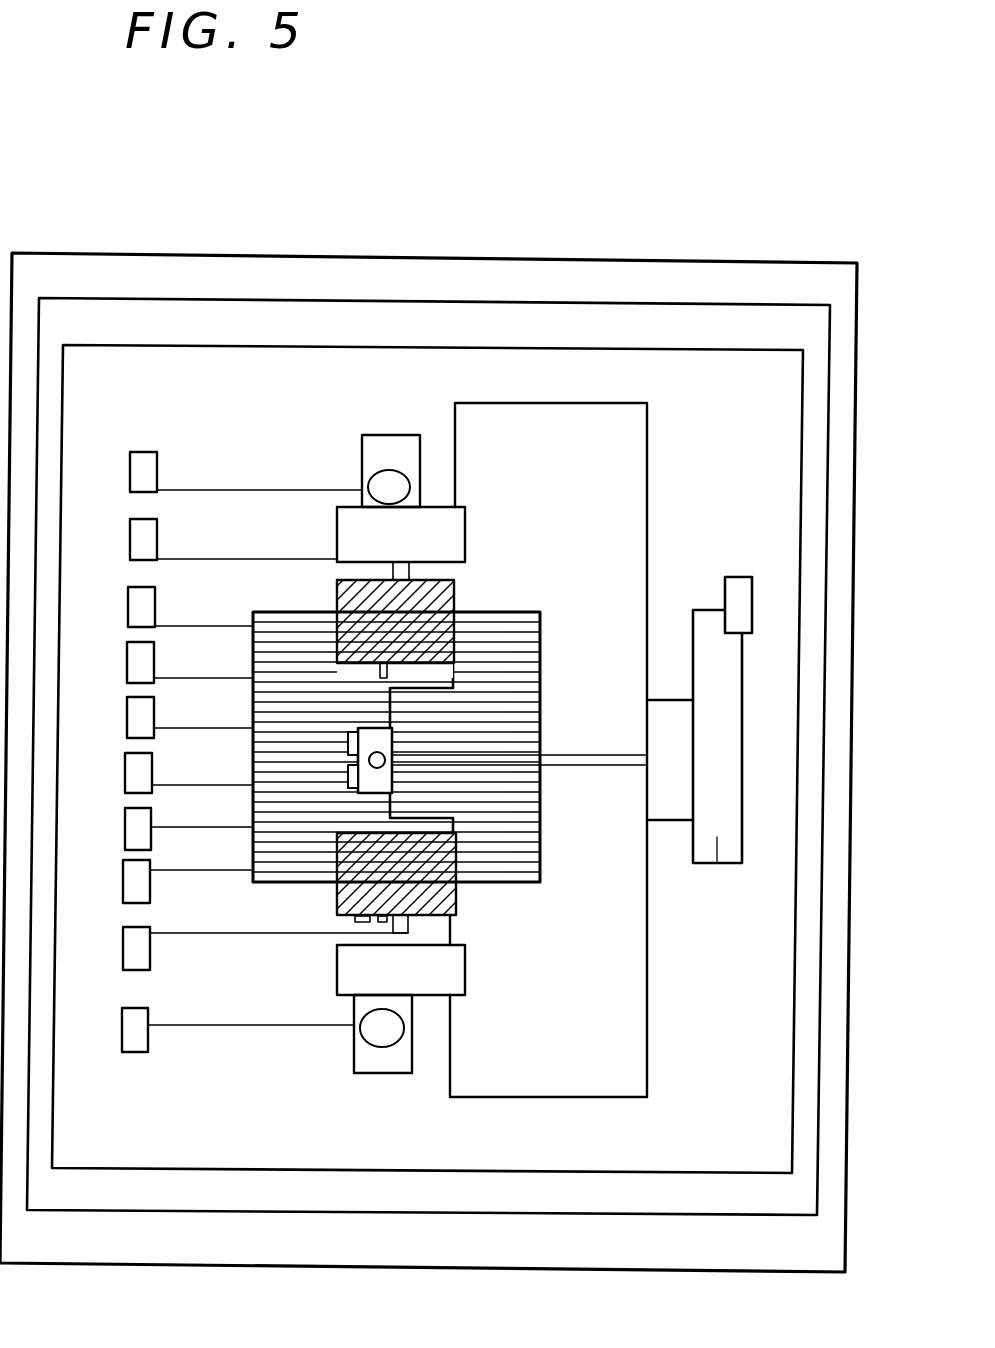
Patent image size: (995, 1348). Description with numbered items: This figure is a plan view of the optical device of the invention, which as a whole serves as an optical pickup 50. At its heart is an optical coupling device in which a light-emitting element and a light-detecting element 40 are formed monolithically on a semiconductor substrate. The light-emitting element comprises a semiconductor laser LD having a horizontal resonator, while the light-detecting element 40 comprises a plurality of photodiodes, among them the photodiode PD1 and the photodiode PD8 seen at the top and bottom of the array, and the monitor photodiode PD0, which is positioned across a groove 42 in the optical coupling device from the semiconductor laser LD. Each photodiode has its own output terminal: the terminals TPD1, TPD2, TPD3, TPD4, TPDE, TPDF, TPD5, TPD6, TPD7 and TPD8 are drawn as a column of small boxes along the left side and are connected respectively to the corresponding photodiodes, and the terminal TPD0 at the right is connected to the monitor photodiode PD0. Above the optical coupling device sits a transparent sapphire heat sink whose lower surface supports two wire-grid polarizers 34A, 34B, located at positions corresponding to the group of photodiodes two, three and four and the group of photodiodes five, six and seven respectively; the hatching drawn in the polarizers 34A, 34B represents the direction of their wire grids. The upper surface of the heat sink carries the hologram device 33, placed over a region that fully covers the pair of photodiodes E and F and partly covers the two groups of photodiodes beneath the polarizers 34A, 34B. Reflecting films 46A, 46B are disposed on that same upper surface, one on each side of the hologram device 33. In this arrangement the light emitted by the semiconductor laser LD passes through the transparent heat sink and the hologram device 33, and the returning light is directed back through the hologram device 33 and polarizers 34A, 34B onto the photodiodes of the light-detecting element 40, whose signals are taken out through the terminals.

The optical pickup 50 is at (382, 246).
The light-detecting element 40 is at (296, 468).
The hologram device 33 is at (527, 884).
The polarizer 34A is at (450, 597).
The polarizer 34B is at (443, 903).
The reflecting film 46A is at (435, 522).
The reflecting film 46B is at (423, 973).
The groove 42 is at (678, 710).
The semiconductor laser LD is at (584, 738).
The photodiode PD1 is at (388, 443).
The photodiode PD8 is at (365, 1060).
The monitor photodiode PD0 is at (717, 837).
The terminal TPD0 is at (738, 587).
The terminal TPD1 is at (112, 472).
The terminal TPD2 is at (201, 539).
The terminal TPD3 is at (158, 607).
The terminal TPD4 is at (158, 662).
The terminal TPDE is at (157, 717).
The terminal TPDF is at (157, 773).
The terminal TPD5 is at (157, 829).
The terminal TPD6 is at (156, 881).
The terminal TPD7 is at (233, 948).
The terminal TPD8 is at (206, 1030).